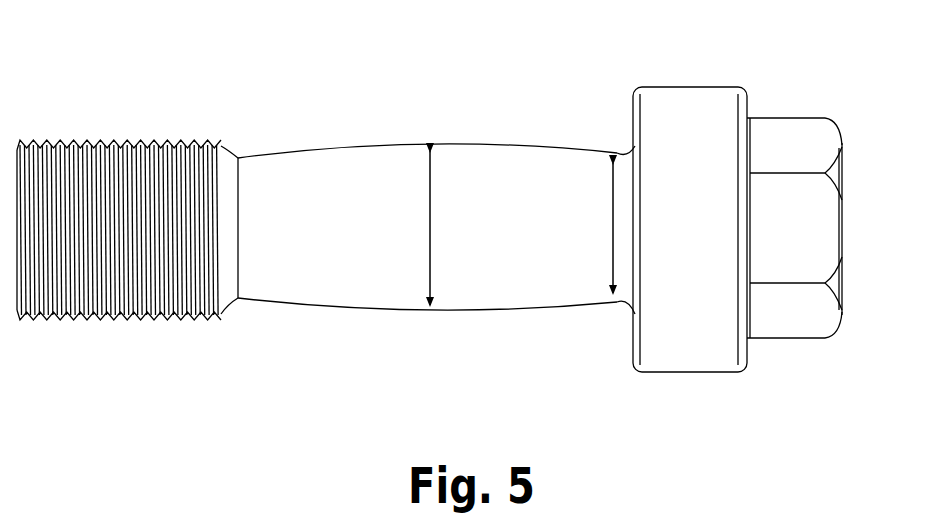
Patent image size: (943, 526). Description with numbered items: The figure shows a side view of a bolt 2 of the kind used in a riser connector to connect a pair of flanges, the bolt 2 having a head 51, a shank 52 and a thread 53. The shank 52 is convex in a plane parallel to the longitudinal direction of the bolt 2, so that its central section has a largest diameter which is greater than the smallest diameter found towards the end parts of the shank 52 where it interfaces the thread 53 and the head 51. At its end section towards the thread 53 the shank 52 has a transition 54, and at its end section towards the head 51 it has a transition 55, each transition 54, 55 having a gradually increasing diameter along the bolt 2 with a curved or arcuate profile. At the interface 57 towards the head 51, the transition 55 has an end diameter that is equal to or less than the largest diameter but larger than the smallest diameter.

The bolt 2 is at (812, 403).
The head 51 is at (782, 84).
The shank 52 is at (414, 120).
The thread 53 is at (122, 115).
The transition 54 is at (228, 150).
The transition 55 is at (627, 150).
The interface 57 is at (632, 313).